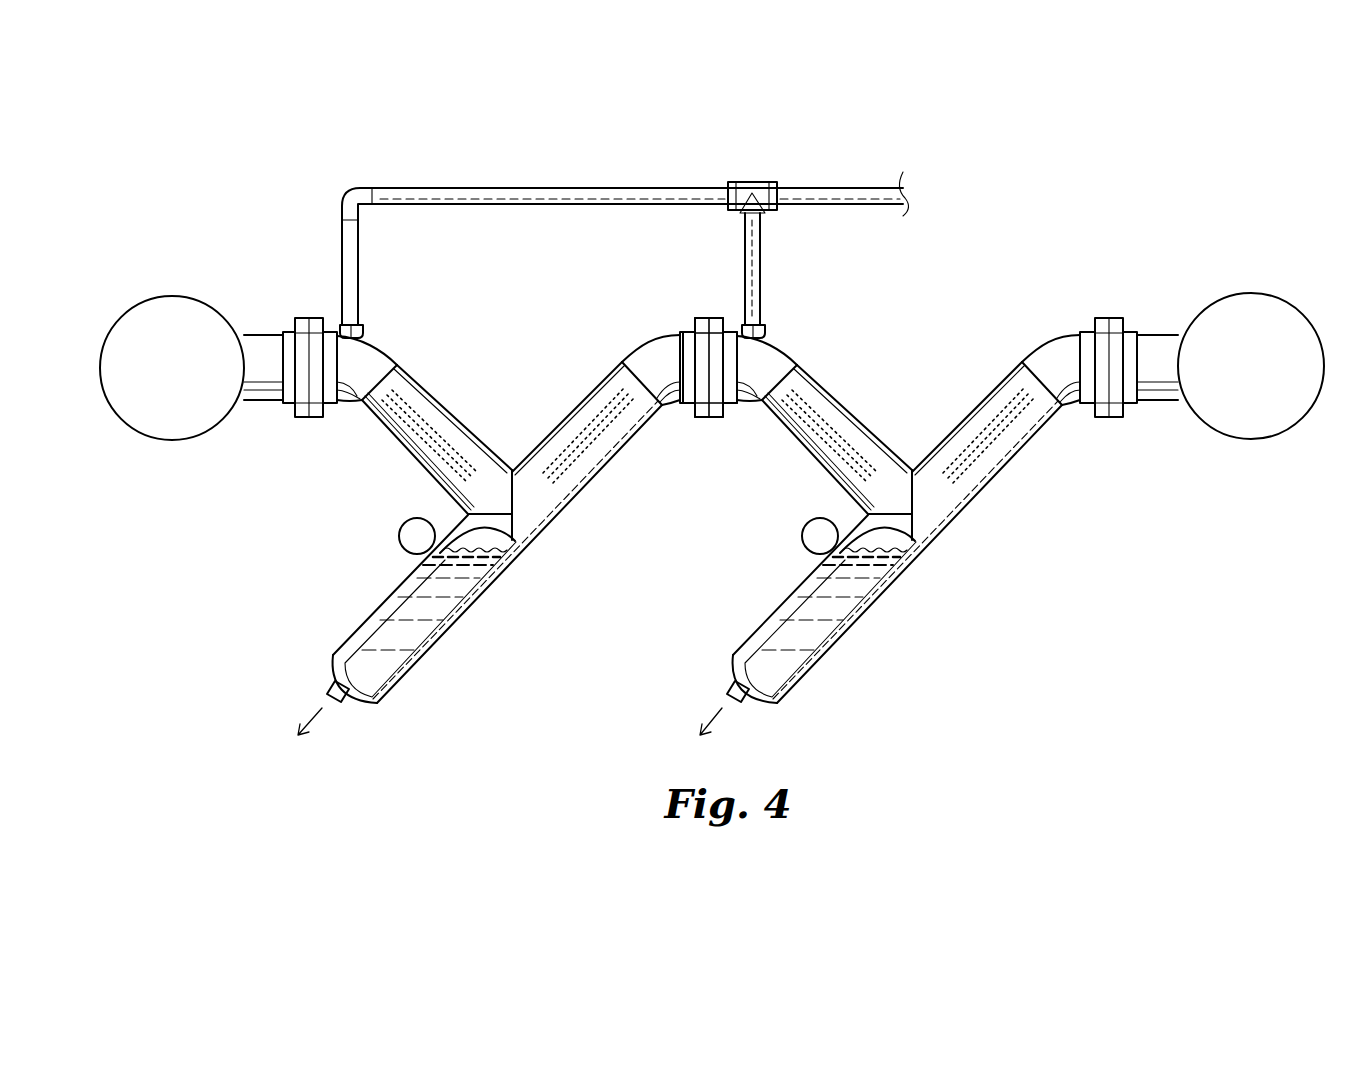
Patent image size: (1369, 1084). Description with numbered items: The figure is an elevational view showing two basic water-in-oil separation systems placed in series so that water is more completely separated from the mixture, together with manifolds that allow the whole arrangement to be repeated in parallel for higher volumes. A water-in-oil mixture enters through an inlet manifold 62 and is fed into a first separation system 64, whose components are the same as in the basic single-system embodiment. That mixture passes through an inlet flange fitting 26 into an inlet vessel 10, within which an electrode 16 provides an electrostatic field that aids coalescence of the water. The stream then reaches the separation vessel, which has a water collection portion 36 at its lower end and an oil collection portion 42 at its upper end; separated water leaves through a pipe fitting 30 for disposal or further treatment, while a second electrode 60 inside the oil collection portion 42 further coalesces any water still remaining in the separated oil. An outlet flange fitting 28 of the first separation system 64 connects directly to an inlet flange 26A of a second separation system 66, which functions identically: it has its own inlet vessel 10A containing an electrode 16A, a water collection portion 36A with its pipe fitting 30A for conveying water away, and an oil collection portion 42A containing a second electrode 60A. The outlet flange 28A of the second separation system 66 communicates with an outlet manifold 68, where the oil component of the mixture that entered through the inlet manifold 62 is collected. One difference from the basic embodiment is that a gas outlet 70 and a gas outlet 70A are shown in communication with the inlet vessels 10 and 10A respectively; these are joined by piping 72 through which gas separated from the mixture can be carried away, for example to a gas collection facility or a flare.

The inlet vessel 10 is at (424, 438).
The electrode 16 is at (405, 460).
The inlet flange fitting 26 is at (312, 320).
The outlet flange fitting 28 is at (700, 320).
The pipe fitting 30 is at (330, 686).
The water collection portion 36 is at (372, 637).
The oil collection portion 42 is at (526, 519).
The second electrode 60 is at (598, 416).
The inlet manifold 62 is at (195, 302).
The first separation system 64 is at (515, 374).
The second separation system 66 is at (890, 486).
The outlet manifold 68 is at (1295, 328).
The gas outlet 70 is at (363, 327).
The piping 72 is at (527, 190).
The inlet vessel 10A is at (824, 438).
The electrode 16A is at (807, 436).
The inlet flange 26A is at (709, 328).
The outlet flange 28A is at (1101, 336).
The pipe fitting 30A is at (696, 675).
The water collection portion 36A is at (799, 637).
The oil collection portion 42A is at (934, 511).
The second electrode 60A is at (989, 401).
The gas outlet 70A is at (798, 275).